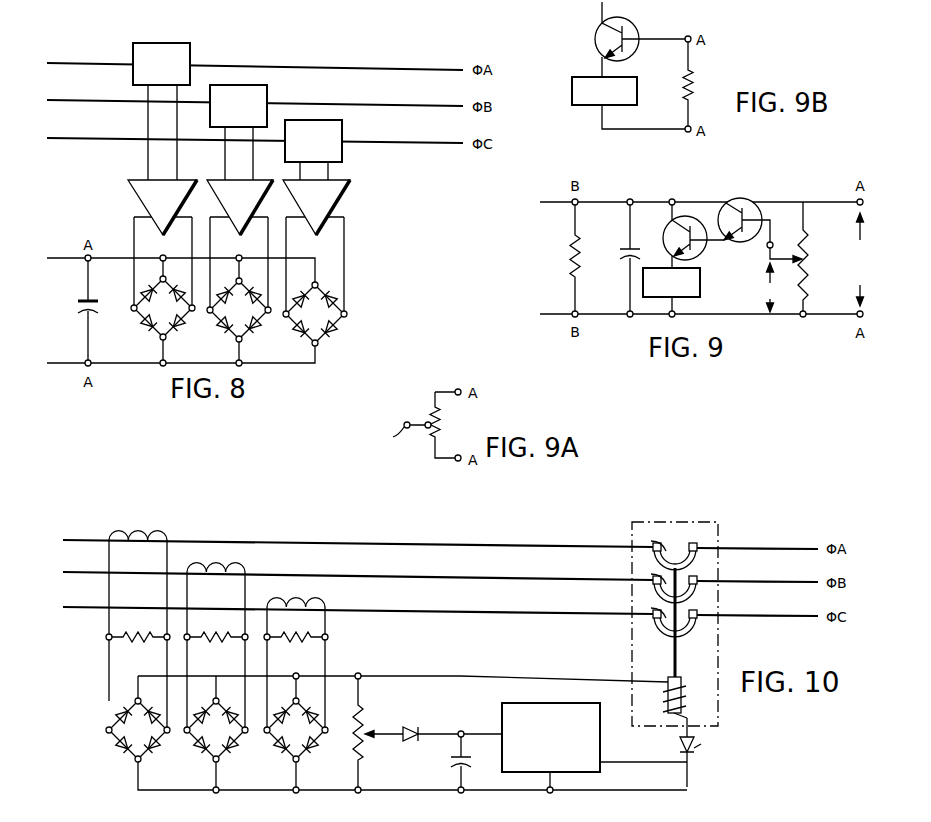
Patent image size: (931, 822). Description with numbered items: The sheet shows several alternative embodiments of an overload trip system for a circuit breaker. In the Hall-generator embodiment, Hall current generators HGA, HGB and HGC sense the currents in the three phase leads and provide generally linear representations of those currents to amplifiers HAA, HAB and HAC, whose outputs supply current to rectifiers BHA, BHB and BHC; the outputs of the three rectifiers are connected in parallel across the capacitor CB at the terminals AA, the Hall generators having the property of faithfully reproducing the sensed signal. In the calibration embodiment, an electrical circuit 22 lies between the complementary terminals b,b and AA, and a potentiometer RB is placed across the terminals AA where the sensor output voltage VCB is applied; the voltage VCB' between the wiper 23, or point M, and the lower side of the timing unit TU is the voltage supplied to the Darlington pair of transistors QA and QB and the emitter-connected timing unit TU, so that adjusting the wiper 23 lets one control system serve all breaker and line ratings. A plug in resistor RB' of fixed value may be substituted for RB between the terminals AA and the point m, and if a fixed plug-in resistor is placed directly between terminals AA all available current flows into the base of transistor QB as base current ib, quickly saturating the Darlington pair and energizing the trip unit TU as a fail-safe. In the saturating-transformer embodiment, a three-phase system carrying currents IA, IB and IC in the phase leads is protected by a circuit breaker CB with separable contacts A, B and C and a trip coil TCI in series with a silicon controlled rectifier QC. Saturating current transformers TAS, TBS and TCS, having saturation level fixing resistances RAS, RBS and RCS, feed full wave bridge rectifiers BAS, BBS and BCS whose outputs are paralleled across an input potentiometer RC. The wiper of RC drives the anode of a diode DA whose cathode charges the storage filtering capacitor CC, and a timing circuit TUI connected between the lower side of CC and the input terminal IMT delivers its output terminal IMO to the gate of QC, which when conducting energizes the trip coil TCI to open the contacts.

In FIG. 8, the Hall current generator HGA is at (178, 74).
In FIG. 8, the Hall current generator HGB is at (255, 116).
In FIG. 8, the Hall current generator HGC is at (330, 151).
In FIG. 8, the amplifier HAA is at (147, 204).
In FIG. 8, the amplifier HAB is at (224, 204).
In FIG. 8, the amplifier HAC is at (300, 204).
In FIG. 8, the rectifier BHA is at (160, 338).
In FIG. 8, the rectifier BHB is at (236, 340).
In FIG. 8, the rectifier BHC is at (312, 344).
In FIG. 8, the capacitor / circuit breaker CB is at (82, 306).
In FIG. 10, the capacitor / circuit breaker CB is at (695, 522).
In FIG. 8, the current IA is at (440, 58).
In FIG. 10, the current IA is at (598, 540).
In FIG. 8, the current IB is at (440, 98).
In FIG. 10, the current IB is at (598, 571).
In FIG. 8, the current IC is at (440, 133).
In FIG. 10, the current IC is at (598, 605).
In FIG. 9B, the transistor OB is at (597, 33).
In FIG. 9B, the timing unit TU is at (604, 91).
In FIG. 9, the timing unit TU is at (682, 291).
In FIG. 9B, the base current ib is at (659, 28).
In FIG. 9, the resistor RA is at (571, 250).
In FIG. 9, the capacitor CA is at (621, 250).
In FIG. 9, the transistor QA is at (698, 236).
In FIG. 9, the transistor QB is at (745, 210).
In FIG. 9, the electrical circuit 22 is at (738, 193).
In FIG. 9, the wiper 23 is at (778, 256).
In FIG. 9, the point M is at (773, 254).
In FIG. 9, the potentiometer RB is at (818, 256).
In FIG. 9, the voltage VCB is at (856, 259).
In FIG. 9, the voltage VCB' is at (765, 287).
In FIG. 9A, the plug in resistor RB' is at (452, 425).
In FIG. 9A, the terminal M m is at (404, 434).
In FIG. 10, the saturating current transformer TAS is at (140, 531).
In FIG. 10, the saturating current transformer TBS is at (238, 563).
In FIG. 10, the saturating current transformer TCS is at (316, 600).
In FIG. 10, the saturation level fixing resistance RAS is at (153, 644).
In FIG. 10, the saturation level fixing resistance RBS is at (231, 644).
In FIG. 10, the saturation level fixing resistance RCS is at (311, 644).
In FIG. 10, the full wave bridge rectifier BAS is at (112, 741).
In FIG. 10, the full wave bridge rectifier BBS is at (200, 753).
In FIG. 10, the full wave bridge rectifier BCS is at (270, 746).
In FIG. 10, the input potentiometer RC is at (364, 724).
In FIG. 10, the diode DA is at (407, 728).
In FIG. 10, the input terminal IMT is at (484, 733).
In FIG. 10, the storage filtering capacitor CC is at (449, 763).
In FIG. 10, the timing circuit TUI is at (536, 750).
In FIG. 10, the output terminal IMO is at (611, 762).
In FIG. 10, the silicon controlled rectifier QC is at (700, 744).
In FIG. 10, the trip coil TCI is at (685, 701).